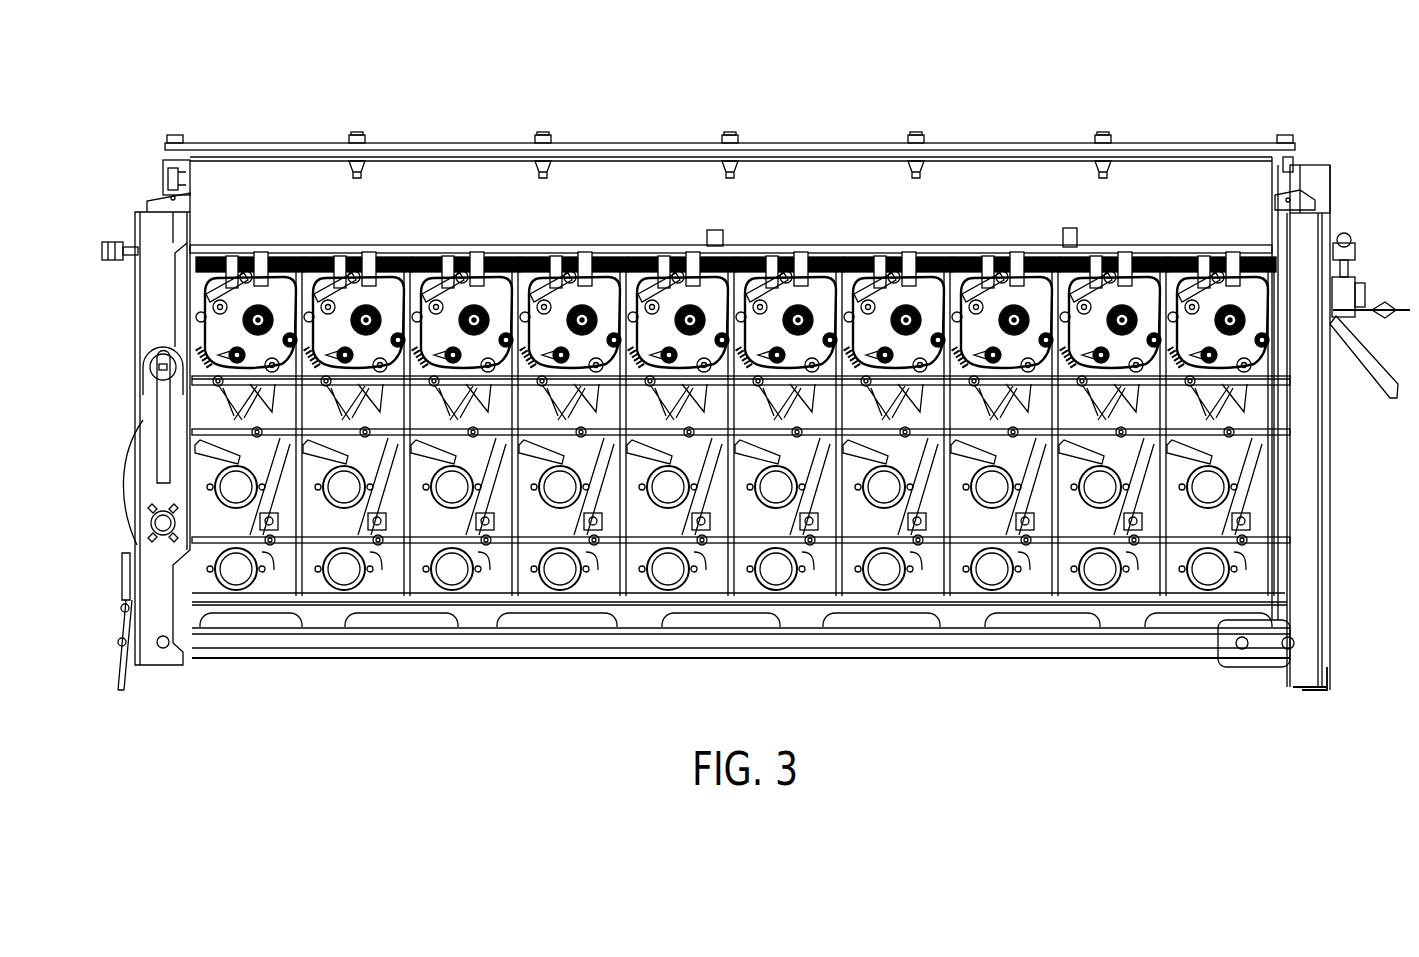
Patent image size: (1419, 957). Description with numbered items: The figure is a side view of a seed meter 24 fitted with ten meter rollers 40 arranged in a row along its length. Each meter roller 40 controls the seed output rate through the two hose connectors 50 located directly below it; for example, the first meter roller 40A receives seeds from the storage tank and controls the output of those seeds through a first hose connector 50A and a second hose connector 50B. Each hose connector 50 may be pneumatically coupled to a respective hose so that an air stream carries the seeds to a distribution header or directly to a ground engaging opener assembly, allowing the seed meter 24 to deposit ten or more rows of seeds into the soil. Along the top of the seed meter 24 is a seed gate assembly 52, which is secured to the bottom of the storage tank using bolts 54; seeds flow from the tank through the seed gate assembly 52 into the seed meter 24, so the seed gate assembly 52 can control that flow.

The seed meter 24 is at (188, 97).
The seed gate assembly 52 is at (822, 143).
The bolts 54 is at (543, 134).
The first meter roller 40A is at (258, 318).
The meter rollers 40 is at (1014, 318).
The first hose connector 50A is at (212, 495).
The second hose connector 50B is at (210, 578).
The hose connectors 50 is at (1200, 572).